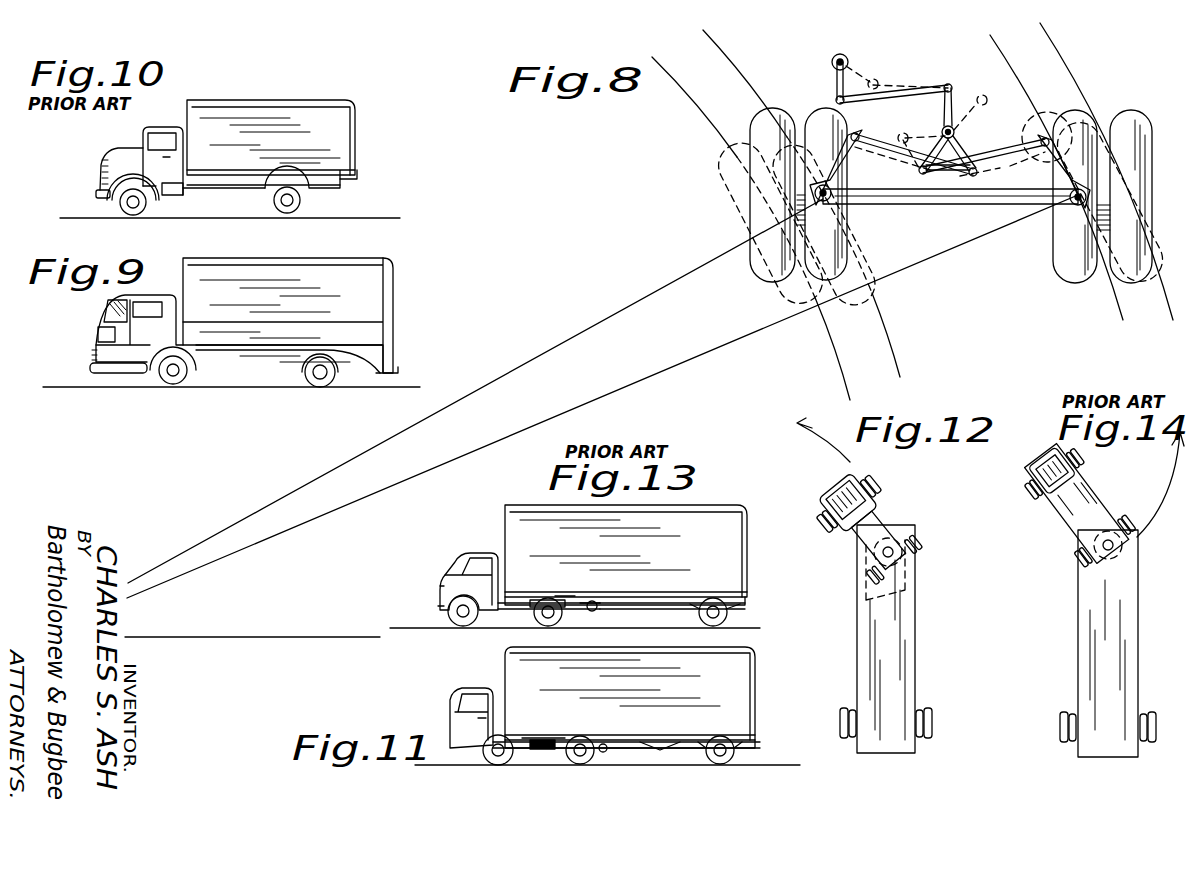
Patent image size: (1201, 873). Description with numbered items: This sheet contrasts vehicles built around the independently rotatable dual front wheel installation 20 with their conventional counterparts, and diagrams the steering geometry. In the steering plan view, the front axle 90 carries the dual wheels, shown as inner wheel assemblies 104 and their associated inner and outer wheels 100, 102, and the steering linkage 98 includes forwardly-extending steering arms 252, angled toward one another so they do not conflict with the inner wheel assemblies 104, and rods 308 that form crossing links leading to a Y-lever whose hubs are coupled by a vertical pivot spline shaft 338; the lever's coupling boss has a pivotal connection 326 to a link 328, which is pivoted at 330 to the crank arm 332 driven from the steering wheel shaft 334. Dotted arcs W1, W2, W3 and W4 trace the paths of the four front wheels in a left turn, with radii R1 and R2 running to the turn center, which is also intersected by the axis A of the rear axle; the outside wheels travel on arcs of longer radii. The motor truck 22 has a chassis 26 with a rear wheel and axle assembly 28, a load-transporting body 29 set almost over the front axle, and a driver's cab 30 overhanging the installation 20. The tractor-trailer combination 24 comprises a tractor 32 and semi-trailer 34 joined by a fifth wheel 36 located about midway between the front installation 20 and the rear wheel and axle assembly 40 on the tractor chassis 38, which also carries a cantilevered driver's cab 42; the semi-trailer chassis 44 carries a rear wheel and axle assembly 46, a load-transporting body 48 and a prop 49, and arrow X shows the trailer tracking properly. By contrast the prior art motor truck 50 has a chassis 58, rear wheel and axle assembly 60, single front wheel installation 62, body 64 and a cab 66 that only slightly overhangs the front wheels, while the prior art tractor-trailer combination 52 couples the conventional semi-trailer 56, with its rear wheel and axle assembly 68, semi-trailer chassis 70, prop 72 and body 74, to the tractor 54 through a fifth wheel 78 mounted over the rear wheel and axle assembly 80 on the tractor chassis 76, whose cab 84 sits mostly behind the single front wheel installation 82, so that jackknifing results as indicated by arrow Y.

In FIG. 9, the independently rotatable dual front wheel installation 20 is at (150, 372).
In FIG. 8, the independently rotatable dual front wheel installation 20 is at (1098, 85).
In FIG. 11, the independently rotatable dual front wheel installation 20 is at (477, 767).
In FIG. 12, the independently rotatable dual front wheel installation 20 is at (893, 486).
In FIG. 9, the motor truck 22 is at (174, 285).
In FIG. 11, the tractor-trailer combination 24 is at (493, 675).
In FIG. 9, the chassis 26 is at (343, 385).
In FIG. 9, the rear wheel and axle assembly 28 is at (300, 385).
In FIG. 9, the load-transporting body 29 is at (393, 300).
In FIG. 9, the driver's cab 30 is at (118, 312).
In FIG. 11, the tractor 32 is at (458, 689).
In FIG. 12, the tractor 32 is at (874, 463).
In FIG. 11, the semi-trailer 34 is at (768, 721).
In FIG. 12, the semi-trailer 34 is at (926, 633).
In FIG. 11, the fifth wheel 36 is at (540, 745).
In FIG. 12, the fifth wheel 36 is at (900, 548).
In FIG. 11, the chassis 38 is at (542, 752).
In FIG. 11, the rear wheel and axle assembly 40 is at (588, 766).
In FIG. 11, the driver's cab 42 is at (455, 716).
In FIG. 11, the chassis 44 is at (662, 756).
In FIG. 11, the rear wheel and axle assembly 46 is at (722, 762).
In FIG. 11, the load-transporting body 48 is at (767, 678).
In FIG. 11, the prop 49 is at (605, 755).
In FIG. 10, the prior art motor truck 50 is at (181, 118).
In FIG. 13, the prior art tractor-trailer combination 52 is at (481, 543).
In FIG. 13, the tractor 54 is at (446, 555).
In FIG. 14, the tractor 54 is at (1100, 481).
In FIG. 13, the semi-trailer 56 is at (752, 567).
In FIG. 10, the chassis 58 is at (305, 202).
In FIG. 10, the rear wheel and axle assembly 60 is at (278, 208).
In FIG. 10, the single front wheel installation 62 is at (110, 200).
In FIG. 10, the load-transporting body 64 is at (360, 142).
In FIG. 10, the driver's cab 66 is at (135, 140).
In FIG. 13, the rear wheel and axle assembly 68 is at (720, 608).
In FIG. 13, the semi-trailer chassis 70 is at (640, 600).
In FIG. 13, the prop 72 is at (594, 600).
In FIG. 13, the load-transporting body 74 is at (745, 548).
In FIG. 13, the chassis 76 is at (518, 605).
In FIG. 13, the fifth wheel 78 is at (538, 600).
In FIG. 13, the rear wheel and axle assembly 80 is at (560, 602).
In FIG. 13, the single front wheel installation 82 is at (440, 608).
In FIG. 14, the single front wheel installation 82 is at (1022, 482).
In FIG. 13, the driver's cab 84 is at (440, 588).
In FIG. 8, the axle 90 is at (952, 213).
In FIG. 8, the steering linkage 98 is at (972, 132).
In FIG. 8, the inner wheel 100 is at (817, 103).
In FIG. 8, the outer wheel 102 is at (768, 118).
In FIG. 8, the inner wheel assemblies 104 is at (866, 293).
In FIG. 8, the steering arms 252 is at (862, 170).
In FIG. 8, the rods 308 is at (984, 162).
In FIG. 8, the pivotal connection 326 is at (950, 84).
In FIG. 8, the link 328 is at (908, 92).
In FIG. 8, the pivot 330 is at (837, 90).
In FIG. 8, the crank arm 332 is at (836, 56).
In FIG. 8, the steering wheel shaft 334 is at (848, 58).
In FIG. 8, the vertical pivot spline shaft 338 is at (940, 128).
In FIG. 8, the arc W1 is at (700, 113).
In FIG. 8, the arc W2 is at (710, 42).
In FIG. 8, the arc W3 is at (988, 35).
In FIG. 8, the arc W4 is at (1045, 30).
In FIG. 8, the radius R1 is at (605, 315).
In FIG. 8, the radius R2 is at (705, 349).
In FIG. 8, the axis of the rear axle A is at (170, 637).
In FIG. 12, the longitudinal arcuate arrow X is at (850, 462).
In FIG. 14, the arcuate lateral arrow Y is at (1156, 500).